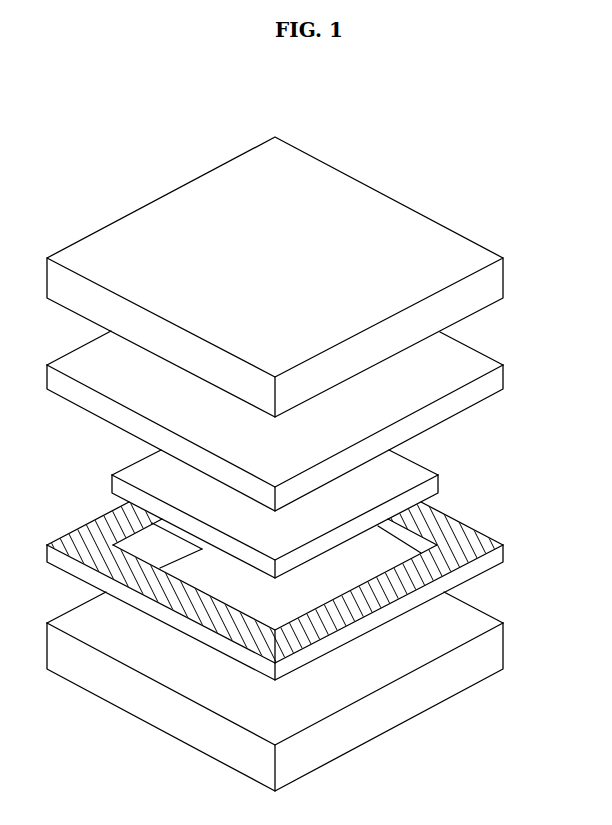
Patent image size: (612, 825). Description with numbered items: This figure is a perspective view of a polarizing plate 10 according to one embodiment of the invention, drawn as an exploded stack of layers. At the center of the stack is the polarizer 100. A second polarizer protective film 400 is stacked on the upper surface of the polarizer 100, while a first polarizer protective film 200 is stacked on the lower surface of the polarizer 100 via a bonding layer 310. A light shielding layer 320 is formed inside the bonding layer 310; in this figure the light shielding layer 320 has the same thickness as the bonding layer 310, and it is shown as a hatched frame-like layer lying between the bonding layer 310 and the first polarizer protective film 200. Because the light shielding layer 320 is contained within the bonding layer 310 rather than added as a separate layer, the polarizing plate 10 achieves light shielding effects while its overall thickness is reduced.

The polarizing plate 10 is at (430, 166).
The second polarizer protective film 400 is at (499, 280).
The polarizer 100 is at (499, 381).
The bonding layer 310 is at (439, 484).
The light shielding layer 320 is at (504, 556).
The first polarizer protective film 200 is at (504, 652).